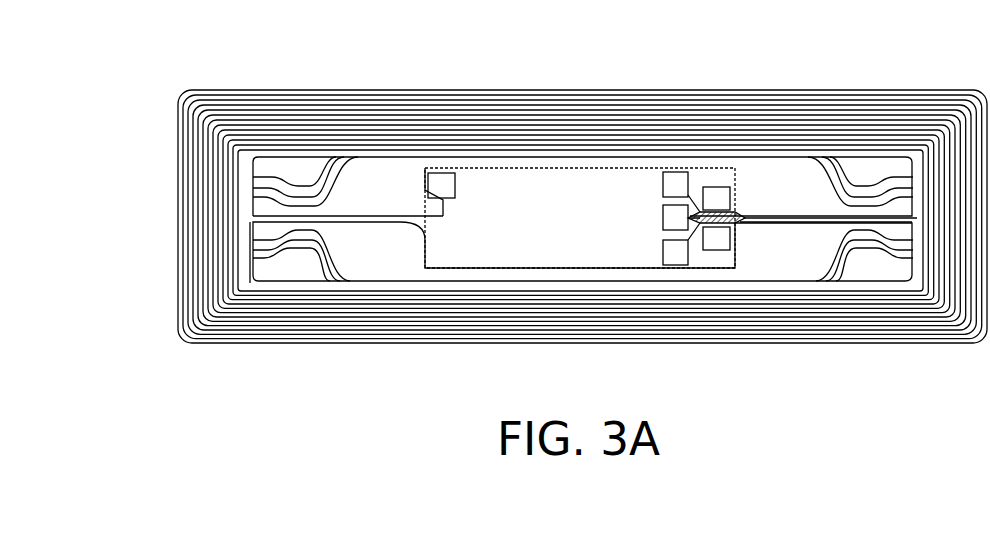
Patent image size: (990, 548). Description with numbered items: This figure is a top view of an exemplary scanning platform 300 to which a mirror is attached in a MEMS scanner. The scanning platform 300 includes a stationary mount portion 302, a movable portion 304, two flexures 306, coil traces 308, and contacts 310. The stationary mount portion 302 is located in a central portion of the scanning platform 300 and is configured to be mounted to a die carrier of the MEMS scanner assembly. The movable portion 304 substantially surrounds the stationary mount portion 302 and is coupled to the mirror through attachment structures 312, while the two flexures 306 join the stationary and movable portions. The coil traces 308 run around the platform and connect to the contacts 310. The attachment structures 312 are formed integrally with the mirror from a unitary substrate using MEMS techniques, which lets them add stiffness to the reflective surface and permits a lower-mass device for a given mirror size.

The scanning platform 300 is at (917, 90).
The stationary mount portion 302 is at (578, 233).
The movable portion 304 is at (748, 90).
The flexures 306 is at (348, 216).
The coil traces 308 is at (343, 91).
The contacts 310 is at (456, 180).
The attachment structures 312 is at (335, 272).